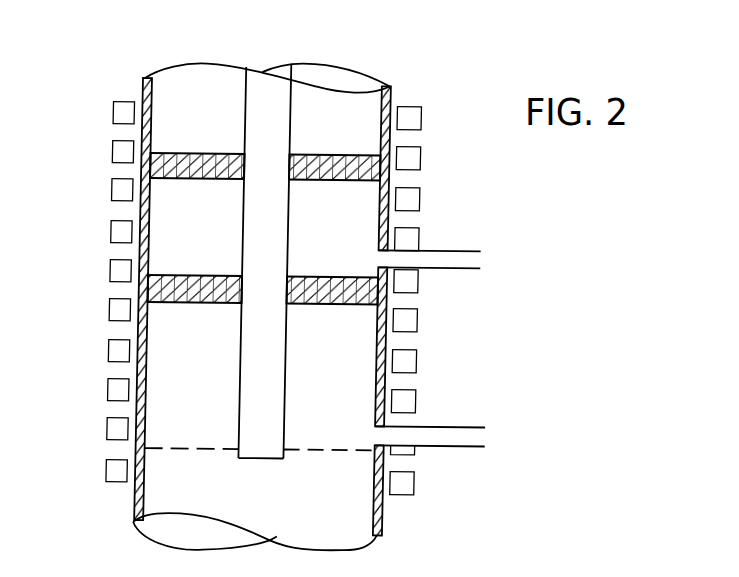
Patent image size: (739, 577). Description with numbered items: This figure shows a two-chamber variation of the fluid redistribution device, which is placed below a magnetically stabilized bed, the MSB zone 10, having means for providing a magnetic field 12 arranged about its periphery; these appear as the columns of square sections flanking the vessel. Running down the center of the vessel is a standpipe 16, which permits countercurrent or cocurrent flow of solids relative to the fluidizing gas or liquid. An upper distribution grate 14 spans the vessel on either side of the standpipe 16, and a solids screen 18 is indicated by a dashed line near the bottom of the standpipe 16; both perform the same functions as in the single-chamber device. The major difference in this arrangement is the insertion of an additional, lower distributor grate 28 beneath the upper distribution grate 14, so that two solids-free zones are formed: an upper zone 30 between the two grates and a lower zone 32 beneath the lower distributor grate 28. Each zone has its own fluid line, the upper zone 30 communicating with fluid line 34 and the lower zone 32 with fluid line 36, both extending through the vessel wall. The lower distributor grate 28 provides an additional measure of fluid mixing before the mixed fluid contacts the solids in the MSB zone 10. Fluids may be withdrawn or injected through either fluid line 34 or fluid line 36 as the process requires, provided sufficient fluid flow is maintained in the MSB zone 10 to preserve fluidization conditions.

The MSB zone 10 is at (265, 131).
The means for providing a magnetic field 12 is at (111, 117).
The upper distribution grate 14 is at (326, 153).
The standpipe 16 is at (293, 233).
The solids screen 18 is at (209, 448).
The lower distributor grate 28 is at (324, 274).
The upper zone 30 is at (206, 241).
The lower zone 32 is at (207, 383).
The fluid line 34 is at (461, 248).
The fluid line 36 is at (460, 424).